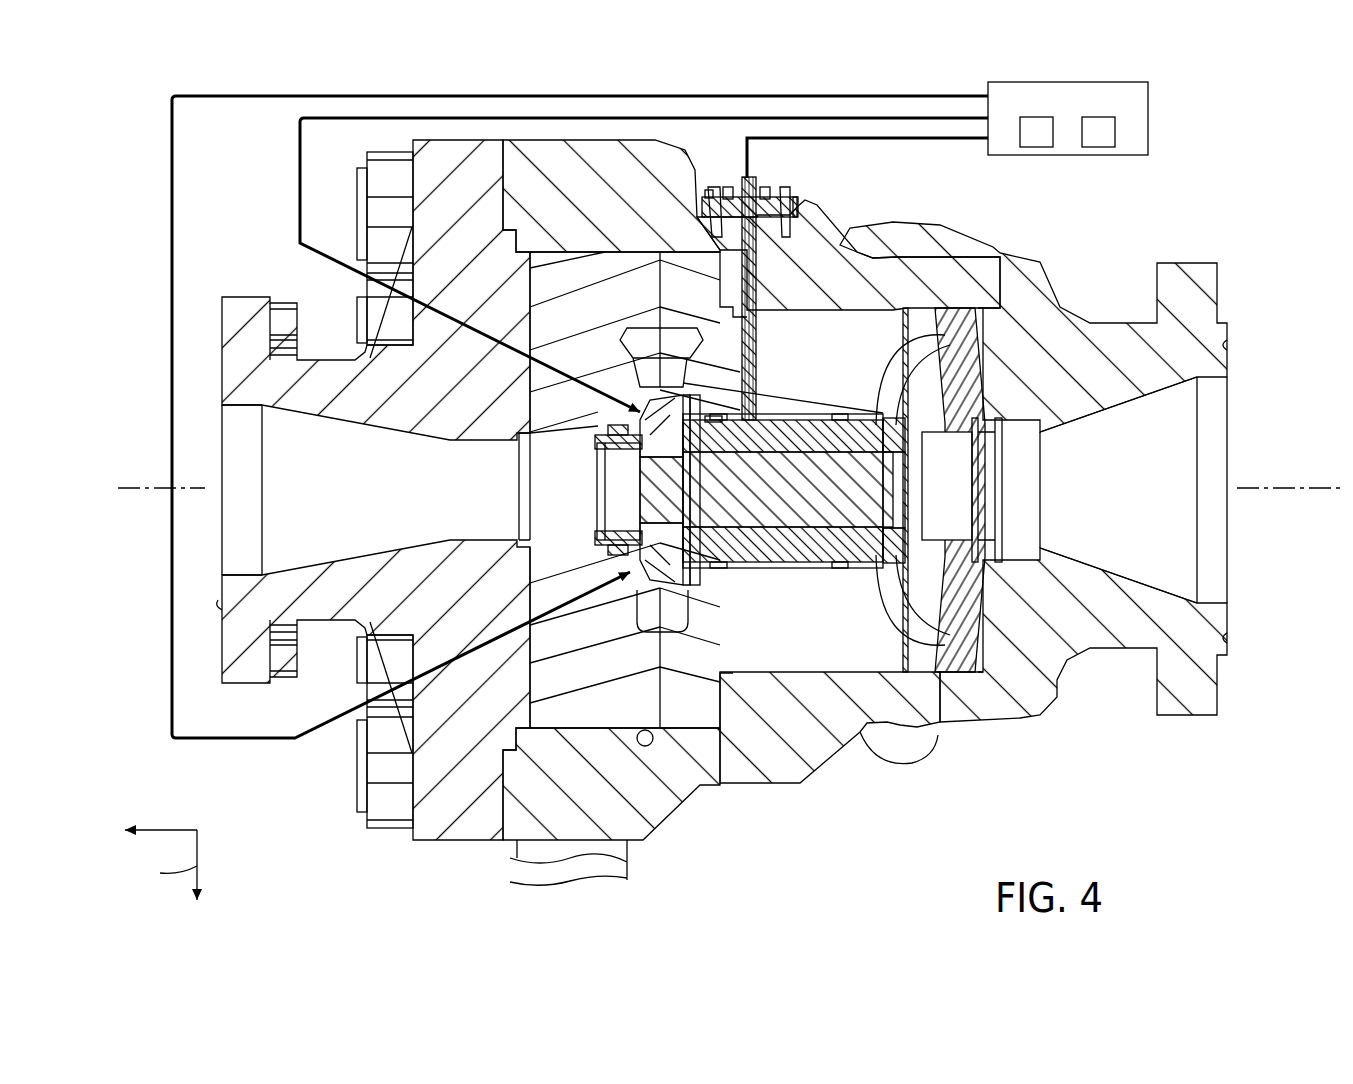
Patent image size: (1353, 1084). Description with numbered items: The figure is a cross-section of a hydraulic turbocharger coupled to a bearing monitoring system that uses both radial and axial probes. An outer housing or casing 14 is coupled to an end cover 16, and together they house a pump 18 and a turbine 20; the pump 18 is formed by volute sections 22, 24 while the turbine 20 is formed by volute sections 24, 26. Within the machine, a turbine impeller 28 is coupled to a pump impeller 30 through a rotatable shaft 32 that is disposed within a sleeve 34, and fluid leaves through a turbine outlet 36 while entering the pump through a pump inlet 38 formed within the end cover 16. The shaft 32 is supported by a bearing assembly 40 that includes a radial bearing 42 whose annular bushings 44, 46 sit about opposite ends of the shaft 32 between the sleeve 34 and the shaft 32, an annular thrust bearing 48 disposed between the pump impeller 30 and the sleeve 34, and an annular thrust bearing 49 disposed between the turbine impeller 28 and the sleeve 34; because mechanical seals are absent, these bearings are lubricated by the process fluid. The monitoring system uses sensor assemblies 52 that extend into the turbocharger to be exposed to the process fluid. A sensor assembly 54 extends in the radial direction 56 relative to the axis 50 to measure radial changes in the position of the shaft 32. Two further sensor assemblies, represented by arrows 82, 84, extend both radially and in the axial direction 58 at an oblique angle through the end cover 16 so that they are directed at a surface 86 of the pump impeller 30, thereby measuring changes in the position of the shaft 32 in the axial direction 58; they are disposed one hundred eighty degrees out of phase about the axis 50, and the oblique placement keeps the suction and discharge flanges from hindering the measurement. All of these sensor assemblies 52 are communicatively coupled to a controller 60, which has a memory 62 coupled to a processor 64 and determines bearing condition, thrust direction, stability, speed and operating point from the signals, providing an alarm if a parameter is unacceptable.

The outer housing 14 is at (600, 141).
The end cover 16 is at (248, 684).
The pump 18 is at (625, 615).
The turbine 20 is at (873, 603).
The volute section 22 is at (563, 713).
The volute section 24 is at (803, 657).
The volute section 26 is at (955, 650).
The turbine impeller 28 is at (918, 600).
The pump impeller 30 is at (655, 595).
The rotatable shaft 32 is at (783, 517).
The sleeve 34 is at (813, 540).
The turbine outlet 36 is at (1180, 547).
The pump inlet 38 is at (223, 530).
The bearing assembly 40 is at (806, 418).
The radial bearing 42 is at (747, 535).
The annular bushing 44 is at (714, 418).
The annular bushing 46 is at (853, 420).
The annular thrust bearing 48 is at (694, 555).
The annular thrust bearing 49 is at (882, 420).
The axis 50 is at (130, 484).
The sensor assemblies 52 is at (313, 247).
The sensor assembly 54 is at (786, 188).
The radial direction 56 is at (161, 865).
The axial direction 58 is at (148, 814).
The controller 60 is at (1148, 112).
The memory 62 is at (1115, 128).
The processor 64 is at (1053, 128).
The sensor assembly 82 is at (342, 270).
The sensor assembly 84 is at (340, 712).
The surface 86 is at (633, 407).